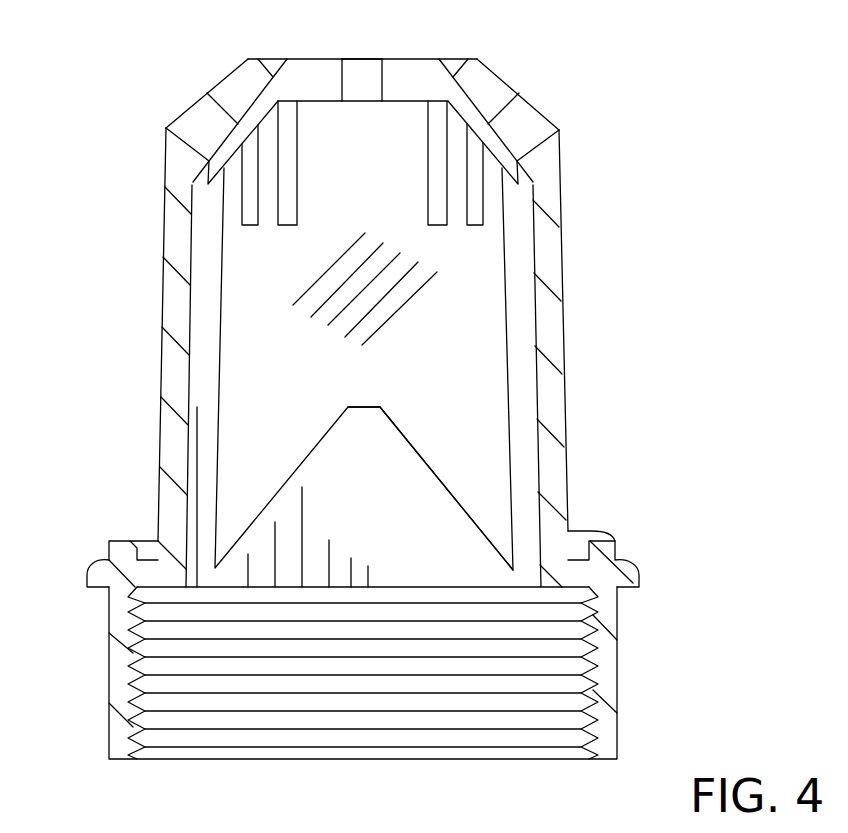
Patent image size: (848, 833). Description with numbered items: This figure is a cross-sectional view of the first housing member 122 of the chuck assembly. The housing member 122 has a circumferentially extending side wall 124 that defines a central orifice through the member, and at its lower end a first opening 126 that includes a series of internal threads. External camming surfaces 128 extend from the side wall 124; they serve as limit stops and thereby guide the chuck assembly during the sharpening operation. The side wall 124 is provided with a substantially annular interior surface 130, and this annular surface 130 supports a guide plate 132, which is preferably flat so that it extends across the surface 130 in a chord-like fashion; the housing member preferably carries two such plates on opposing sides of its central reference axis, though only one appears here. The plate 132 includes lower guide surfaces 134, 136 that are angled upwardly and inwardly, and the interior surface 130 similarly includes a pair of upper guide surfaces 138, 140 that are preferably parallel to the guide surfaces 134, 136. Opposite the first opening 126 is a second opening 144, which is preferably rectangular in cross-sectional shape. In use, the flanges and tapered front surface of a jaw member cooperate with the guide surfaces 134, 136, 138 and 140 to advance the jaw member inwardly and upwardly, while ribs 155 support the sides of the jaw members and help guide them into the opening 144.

The first housing member 122 is at (116, 116).
The side wall 124 is at (550, 320).
The first opening 126 is at (583, 731).
The external camming surfaces 128 is at (123, 539).
The annular interior surface 130 is at (415, 573).
The guide plate 132 is at (256, 386).
The lower guide surface 134 is at (327, 435).
The lower guide surface 136 is at (433, 478).
The upper guide surface 138 is at (214, 153).
The upper guide surface 140 is at (500, 75).
The second opening 144 is at (416, 61).
The ribs 155 is at (298, 142).